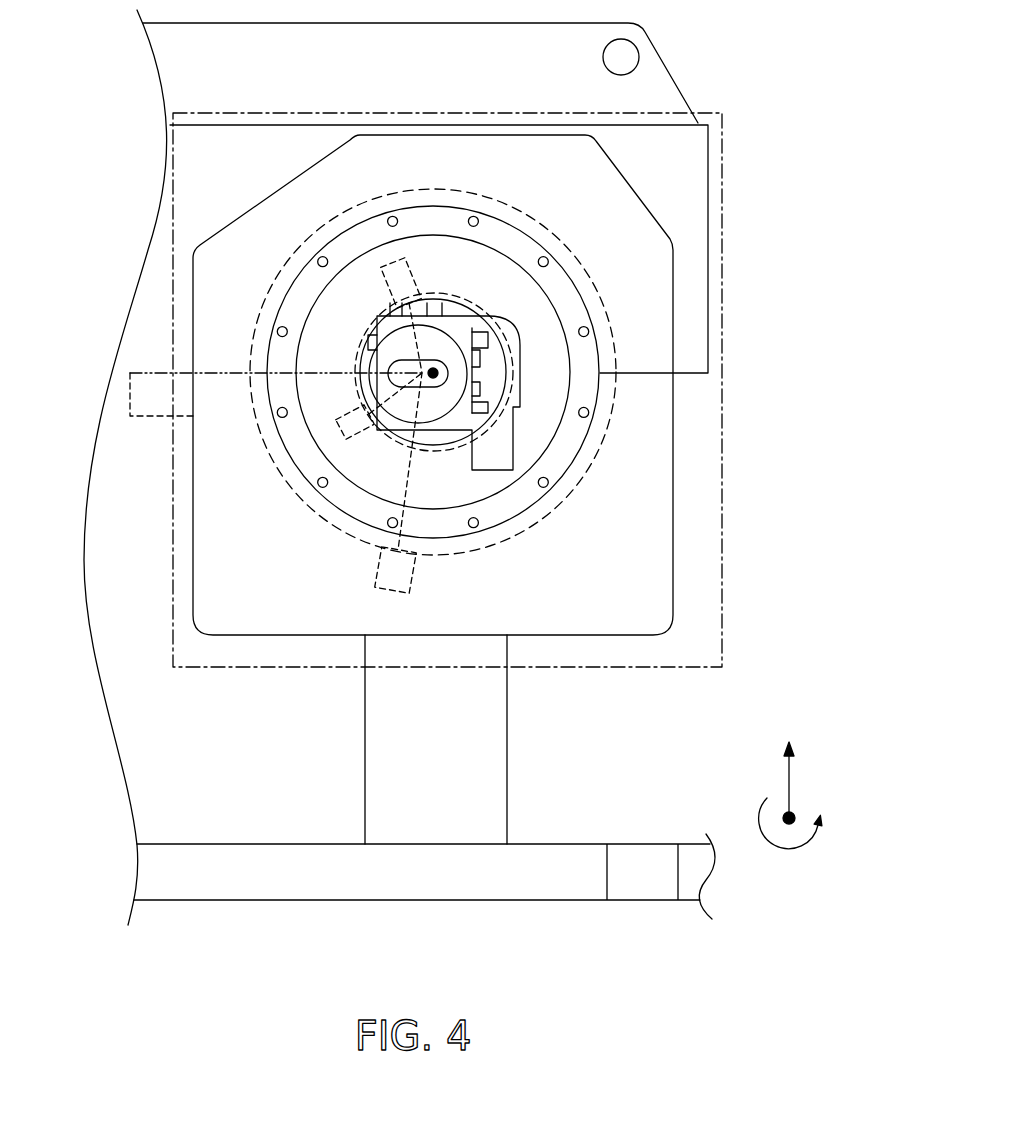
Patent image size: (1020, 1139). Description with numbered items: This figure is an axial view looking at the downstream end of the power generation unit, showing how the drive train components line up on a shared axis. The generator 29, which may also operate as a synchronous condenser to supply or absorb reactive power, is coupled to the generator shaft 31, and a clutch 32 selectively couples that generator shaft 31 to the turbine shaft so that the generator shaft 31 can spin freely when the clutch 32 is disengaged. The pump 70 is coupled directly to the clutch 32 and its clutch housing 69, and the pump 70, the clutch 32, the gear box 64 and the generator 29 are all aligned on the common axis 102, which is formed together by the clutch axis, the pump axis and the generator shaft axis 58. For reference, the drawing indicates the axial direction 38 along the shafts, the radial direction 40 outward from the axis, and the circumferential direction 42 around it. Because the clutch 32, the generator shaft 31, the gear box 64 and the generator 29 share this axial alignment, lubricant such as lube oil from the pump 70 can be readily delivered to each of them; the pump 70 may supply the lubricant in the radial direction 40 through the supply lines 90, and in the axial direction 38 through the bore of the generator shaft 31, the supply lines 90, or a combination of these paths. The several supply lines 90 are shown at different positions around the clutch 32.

The generator 29 is at (720, 588).
The generator shaft 31 is at (455, 293).
The clutch 32 is at (572, 508).
The axial direction 38 is at (797, 812).
The radial direction 40 is at (788, 790).
The circumferential direction 42 is at (770, 848).
The generator shaft axis 58 is at (486, 271).
The common axis 102 is at (434, 372).
The gear box 64 is at (684, 72).
The clutch housing 69 is at (673, 435).
The pump 70 is at (522, 373).
The supply lines 90 is at (392, 264).